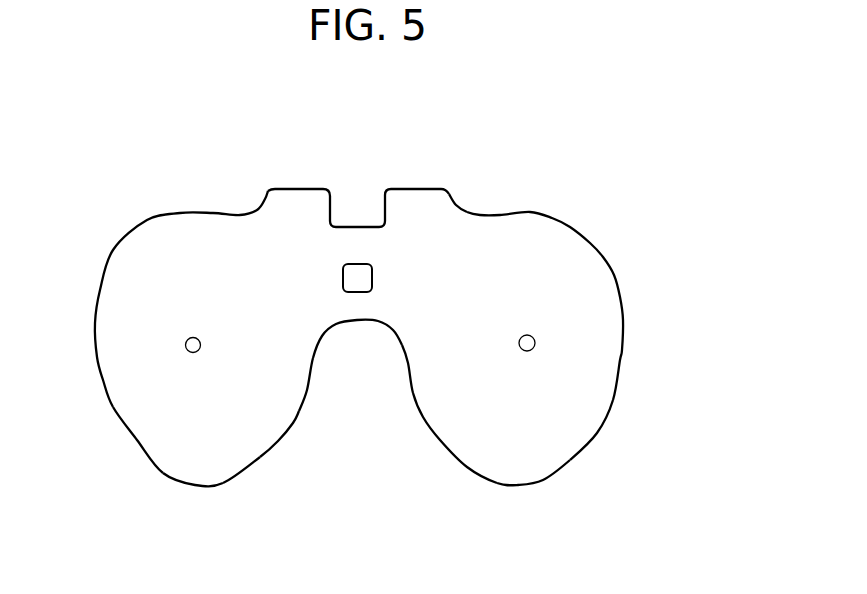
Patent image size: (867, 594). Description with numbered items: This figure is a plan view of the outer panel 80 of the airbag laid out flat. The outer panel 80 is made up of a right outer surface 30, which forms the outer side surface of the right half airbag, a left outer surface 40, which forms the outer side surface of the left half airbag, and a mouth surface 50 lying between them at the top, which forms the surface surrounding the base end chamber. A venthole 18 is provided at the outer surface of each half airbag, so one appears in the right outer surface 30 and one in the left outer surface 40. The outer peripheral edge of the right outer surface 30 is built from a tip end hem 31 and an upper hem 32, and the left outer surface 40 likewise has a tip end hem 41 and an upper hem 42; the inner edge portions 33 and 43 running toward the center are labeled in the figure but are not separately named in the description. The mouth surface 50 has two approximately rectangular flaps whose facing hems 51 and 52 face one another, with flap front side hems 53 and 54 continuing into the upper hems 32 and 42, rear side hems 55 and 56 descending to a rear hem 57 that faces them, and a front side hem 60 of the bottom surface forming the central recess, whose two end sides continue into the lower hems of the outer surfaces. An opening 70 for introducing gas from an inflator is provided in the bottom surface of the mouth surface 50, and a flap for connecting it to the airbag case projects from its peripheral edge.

The venthole 18 is at (200, 347).
The right outer surface 30 is at (103, 427).
The tip end hem 31 is at (196, 487).
The upper hem 32 is at (100, 361).
The inner edge of left portion 33 is at (296, 421).
The left outer surface 40 is at (620, 403).
The tip end hem 41 is at (518, 487).
The upper hem 42 is at (622, 360).
The inner edge of right portion 43 is at (421, 416).
The mouth surface 50 is at (427, 168).
The facing hem 51 is at (300, 189).
The facing hem 52 is at (410, 189).
The flap front side hem 53 is at (268, 198).
The flap front side hem 54 is at (455, 202).
The rear side hem 55 is at (331, 203).
The rear side hem 56 is at (385, 207).
The rear hem 57 is at (346, 227).
The front side hem of the bottom surface 60 is at (358, 322).
The opening 70 is at (372, 280).
The outer panel 80 is at (566, 210).